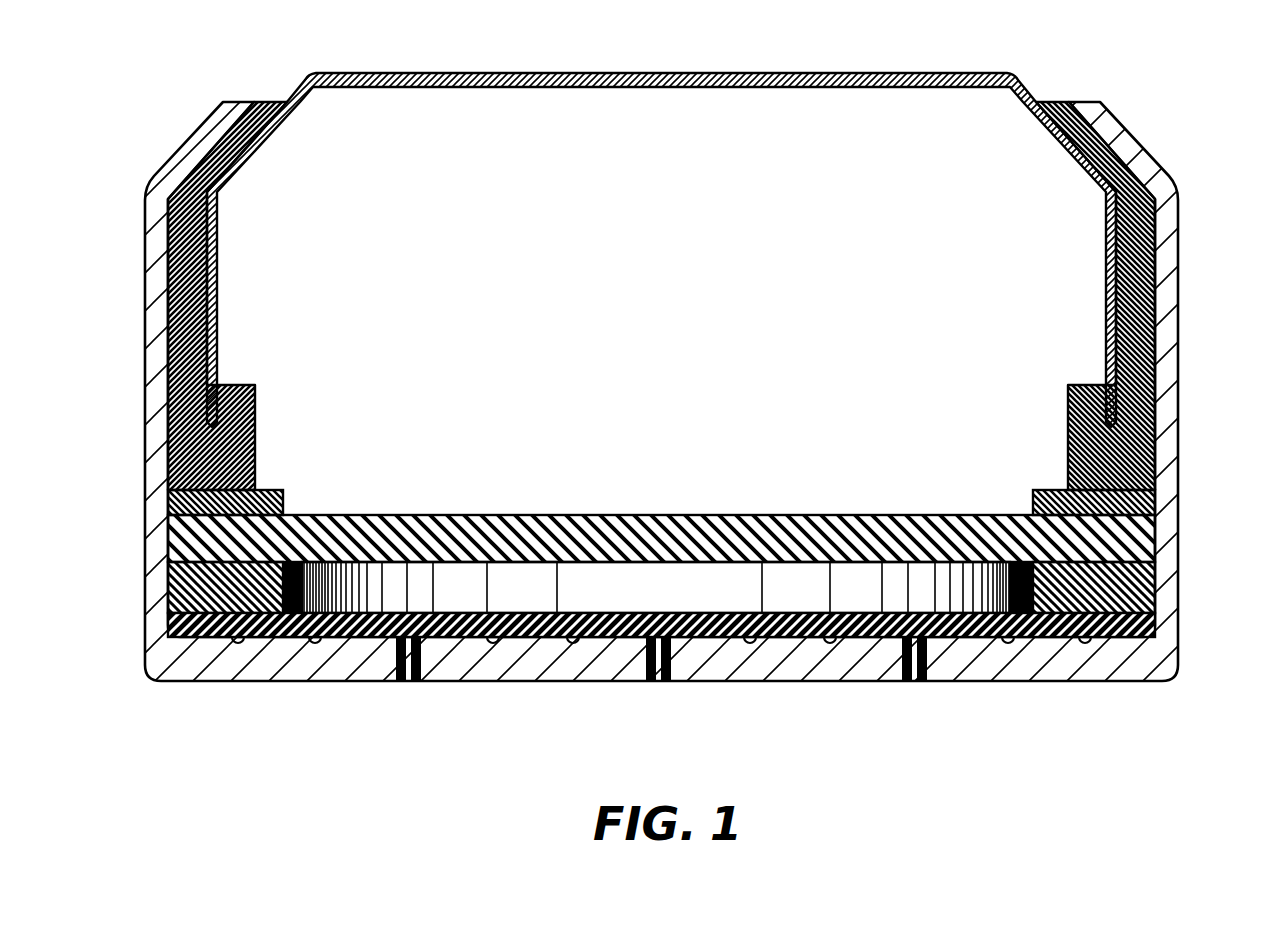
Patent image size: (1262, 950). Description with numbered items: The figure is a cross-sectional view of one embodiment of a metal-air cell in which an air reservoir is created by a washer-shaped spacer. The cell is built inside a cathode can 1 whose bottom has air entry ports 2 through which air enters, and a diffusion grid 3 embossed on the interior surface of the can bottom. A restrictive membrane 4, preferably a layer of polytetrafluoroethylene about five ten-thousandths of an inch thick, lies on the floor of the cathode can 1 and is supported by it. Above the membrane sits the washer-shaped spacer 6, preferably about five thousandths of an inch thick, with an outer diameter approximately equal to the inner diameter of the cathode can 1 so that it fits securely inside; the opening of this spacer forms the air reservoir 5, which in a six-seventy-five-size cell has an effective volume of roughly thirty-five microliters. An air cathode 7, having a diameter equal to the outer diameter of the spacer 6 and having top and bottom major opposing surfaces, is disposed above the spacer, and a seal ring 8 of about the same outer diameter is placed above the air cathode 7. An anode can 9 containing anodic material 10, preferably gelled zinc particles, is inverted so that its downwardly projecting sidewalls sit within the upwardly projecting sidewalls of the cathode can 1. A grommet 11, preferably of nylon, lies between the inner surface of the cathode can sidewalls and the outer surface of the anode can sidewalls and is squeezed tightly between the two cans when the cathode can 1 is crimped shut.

The cathode can 1 is at (185, 142).
The air entry ports 2 is at (417, 683).
The diffusion grid 3 is at (314, 639).
The restrictive membrane 4 is at (146, 670).
The air reservoir 5 is at (633, 597).
The washer-shaped spacer 6 is at (170, 583).
The air cathode 7 is at (183, 540).
The seal ring 8 is at (168, 503).
The anode can 9 is at (431, 73).
The anodic material 10 is at (617, 170).
The grommet 11 is at (168, 218).